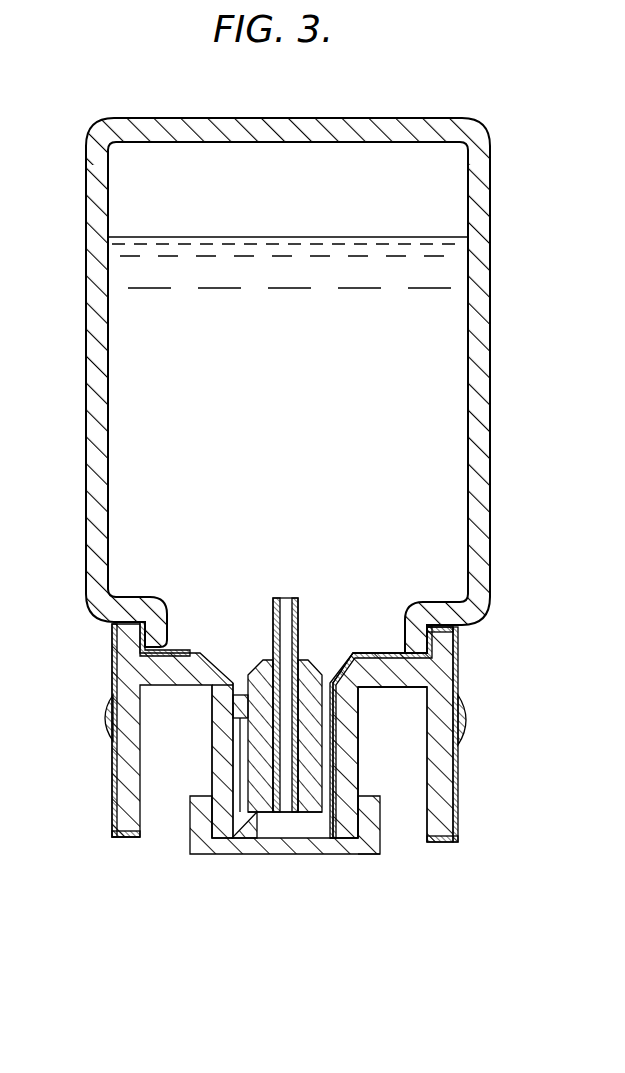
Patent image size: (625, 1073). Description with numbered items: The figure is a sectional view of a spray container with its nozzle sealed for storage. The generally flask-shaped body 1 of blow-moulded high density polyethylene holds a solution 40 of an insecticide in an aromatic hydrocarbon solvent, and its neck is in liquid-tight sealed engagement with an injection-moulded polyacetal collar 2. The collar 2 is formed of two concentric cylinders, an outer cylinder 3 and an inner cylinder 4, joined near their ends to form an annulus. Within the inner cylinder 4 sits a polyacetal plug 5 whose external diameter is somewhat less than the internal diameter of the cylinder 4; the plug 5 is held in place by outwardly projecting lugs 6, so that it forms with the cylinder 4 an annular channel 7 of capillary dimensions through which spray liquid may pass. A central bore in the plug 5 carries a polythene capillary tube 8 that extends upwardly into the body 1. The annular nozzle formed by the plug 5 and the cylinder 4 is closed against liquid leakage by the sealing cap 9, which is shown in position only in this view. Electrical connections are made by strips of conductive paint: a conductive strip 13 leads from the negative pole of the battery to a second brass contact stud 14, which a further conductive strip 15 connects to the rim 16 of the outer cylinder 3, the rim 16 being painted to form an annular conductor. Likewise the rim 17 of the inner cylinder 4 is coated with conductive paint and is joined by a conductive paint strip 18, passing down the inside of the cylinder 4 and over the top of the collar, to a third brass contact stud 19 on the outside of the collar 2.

The body 1 is at (495, 153).
The collar 2 is at (456, 786).
The outer cylinder 3 is at (427, 752).
The inner cylinder 4 is at (360, 716).
The plug 5 is at (308, 660).
The lugs 6 is at (216, 704).
The annular channel 7 is at (240, 820).
The capillary tube 8 is at (282, 597).
The sealing cap 9 is at (382, 851).
The conductive strip 13 is at (112, 650).
The second contact stud 14 is at (105, 703).
The conductive strip 15 is at (112, 782).
The rim of outer cylinder 16 is at (122, 838).
The rim of inner cylinder 17 is at (348, 852).
The conductive paint strip 18 is at (372, 655).
The third contact stud 19 is at (466, 720).
The solution 40 is at (233, 252).